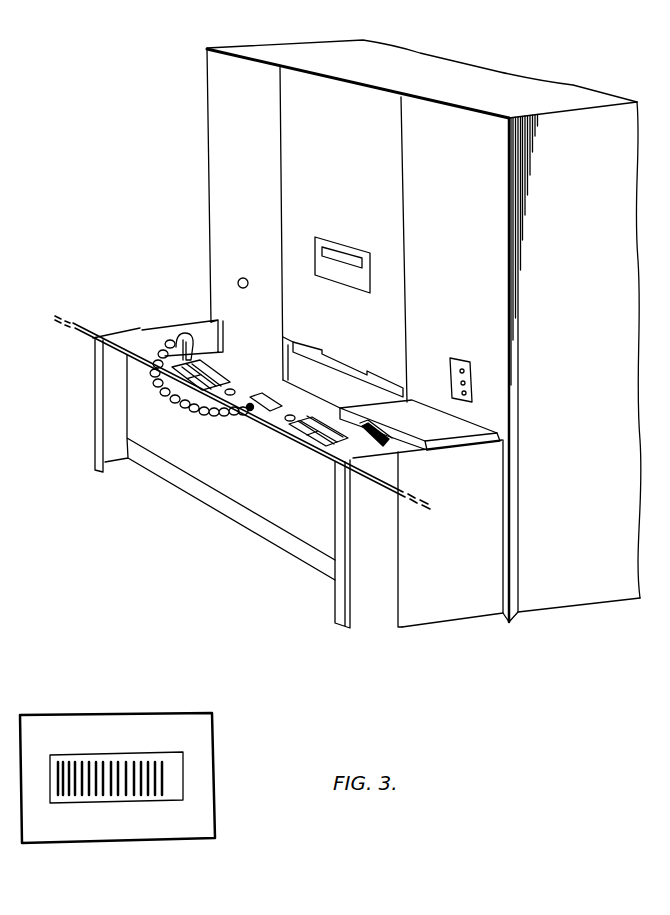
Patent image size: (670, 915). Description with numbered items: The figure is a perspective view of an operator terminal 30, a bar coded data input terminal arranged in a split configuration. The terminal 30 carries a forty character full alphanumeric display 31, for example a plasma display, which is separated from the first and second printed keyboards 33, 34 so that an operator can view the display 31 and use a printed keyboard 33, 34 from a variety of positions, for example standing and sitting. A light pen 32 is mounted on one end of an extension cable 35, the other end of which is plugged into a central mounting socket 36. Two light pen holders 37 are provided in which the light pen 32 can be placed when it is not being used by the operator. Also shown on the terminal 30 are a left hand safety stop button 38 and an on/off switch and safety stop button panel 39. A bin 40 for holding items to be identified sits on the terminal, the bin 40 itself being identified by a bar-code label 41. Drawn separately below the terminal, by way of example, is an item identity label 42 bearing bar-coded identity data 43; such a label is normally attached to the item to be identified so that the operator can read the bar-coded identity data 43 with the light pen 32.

The operator terminal 30 is at (591, 193).
The alphanumeric display 31 is at (348, 249).
The light pen 32 is at (192, 338).
The first printed keyboard 33 is at (307, 437).
The second printed keyboard 34 is at (213, 372).
The extension cable 35 is at (153, 383).
The central mounting socket 36 is at (247, 413).
The light pen holder 37 is at (210, 413).
The left hand safety stop button 38 is at (237, 280).
The on/off switch and safety stop button panel 39 is at (473, 377).
The bin 40 is at (443, 445).
The bar-code label 41 is at (388, 445).
The item identity label 42 is at (150, 842).
The bar code 43 is at (142, 758).